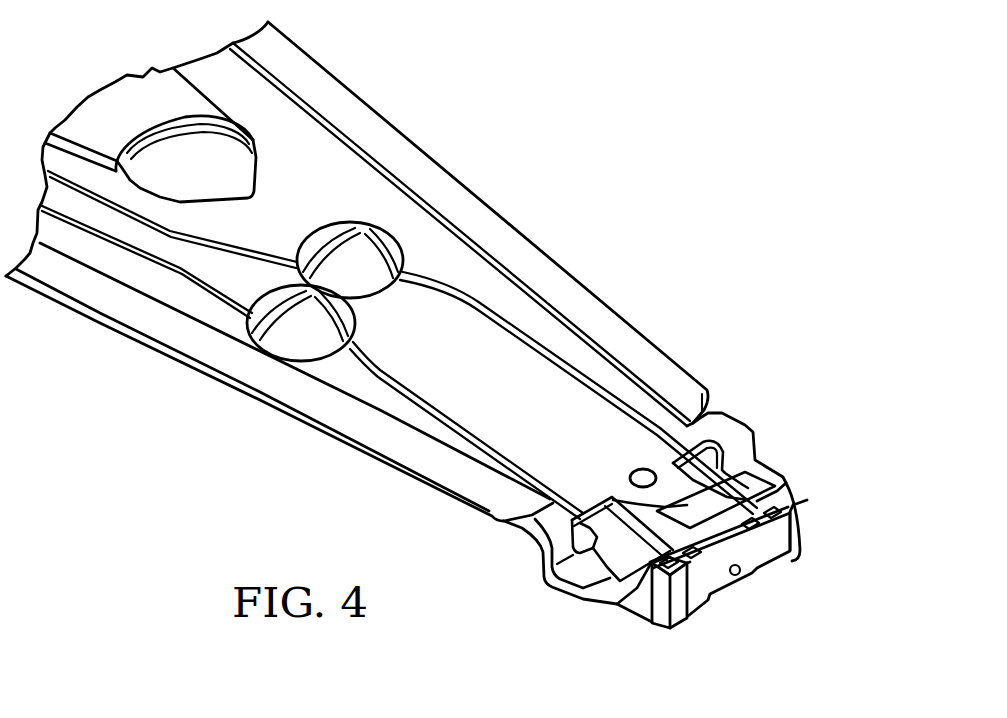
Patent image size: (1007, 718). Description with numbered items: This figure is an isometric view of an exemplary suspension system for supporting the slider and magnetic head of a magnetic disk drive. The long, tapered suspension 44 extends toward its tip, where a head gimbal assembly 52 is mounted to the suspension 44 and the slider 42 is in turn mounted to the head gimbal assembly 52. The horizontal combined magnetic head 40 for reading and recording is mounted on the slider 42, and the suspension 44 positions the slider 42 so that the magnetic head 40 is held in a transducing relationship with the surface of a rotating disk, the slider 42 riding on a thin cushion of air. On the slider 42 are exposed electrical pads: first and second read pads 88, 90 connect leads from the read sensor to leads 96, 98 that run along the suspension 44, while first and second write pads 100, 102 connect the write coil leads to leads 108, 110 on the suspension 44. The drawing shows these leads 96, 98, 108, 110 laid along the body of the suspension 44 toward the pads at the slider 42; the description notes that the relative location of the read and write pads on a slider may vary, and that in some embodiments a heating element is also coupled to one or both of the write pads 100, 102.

The magnetic head 40 is at (750, 597).
The slider 42 is at (606, 602).
The suspension 44 is at (403, 322).
The head gimbal assembly 52 is at (609, 422).
The first read pad 88 is at (655, 578).
The second read pad 90 is at (773, 506).
The lead 96 is at (387, 387).
The lead 98 is at (596, 372).
The first write pad 100 is at (687, 610).
The second write pad 102 is at (797, 553).
The lead 108 is at (412, 391).
The lead 110 is at (503, 325).